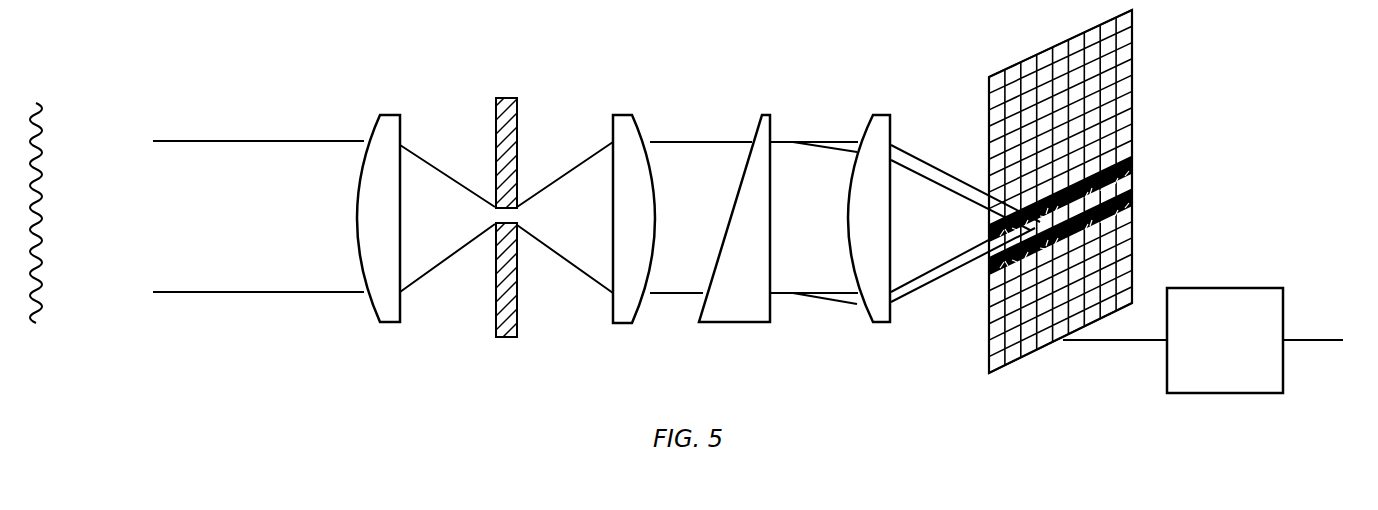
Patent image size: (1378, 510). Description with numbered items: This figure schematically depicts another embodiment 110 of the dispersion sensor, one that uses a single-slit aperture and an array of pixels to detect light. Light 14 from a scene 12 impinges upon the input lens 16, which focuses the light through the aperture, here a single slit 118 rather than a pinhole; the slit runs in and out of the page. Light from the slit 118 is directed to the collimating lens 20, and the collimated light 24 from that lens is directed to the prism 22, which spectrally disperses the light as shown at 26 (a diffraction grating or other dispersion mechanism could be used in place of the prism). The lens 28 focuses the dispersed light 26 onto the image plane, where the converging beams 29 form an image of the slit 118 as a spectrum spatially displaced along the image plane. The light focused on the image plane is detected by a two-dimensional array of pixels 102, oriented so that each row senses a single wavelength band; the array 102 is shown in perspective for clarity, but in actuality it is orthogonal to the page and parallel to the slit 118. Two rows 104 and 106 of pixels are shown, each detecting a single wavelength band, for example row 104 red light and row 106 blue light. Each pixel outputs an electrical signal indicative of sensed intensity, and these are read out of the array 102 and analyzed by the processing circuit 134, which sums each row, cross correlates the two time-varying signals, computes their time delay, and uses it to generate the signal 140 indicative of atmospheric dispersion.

The scene 12 is at (32, 92).
The light 14 is at (252, 120).
The input lens 16 is at (389, 113).
The dispersion sensor embodiment 110 is at (568, 73).
The single slit 118 is at (508, 217).
The collimating lens 20 is at (618, 112).
The collimated light 24 is at (691, 141).
The prism 22 is at (773, 117).
The dispersed light 26 is at (830, 140).
The lens 28 is at (892, 125).
The converging beams 29 is at (941, 293).
The two-dimensional array of pixels 102 is at (1015, 62).
The row of pixels 104 is at (1127, 160).
The row of pixels 106 is at (1130, 191).
The processing circuit 134 is at (1225, 285).
The signal 140 is at (1315, 337).